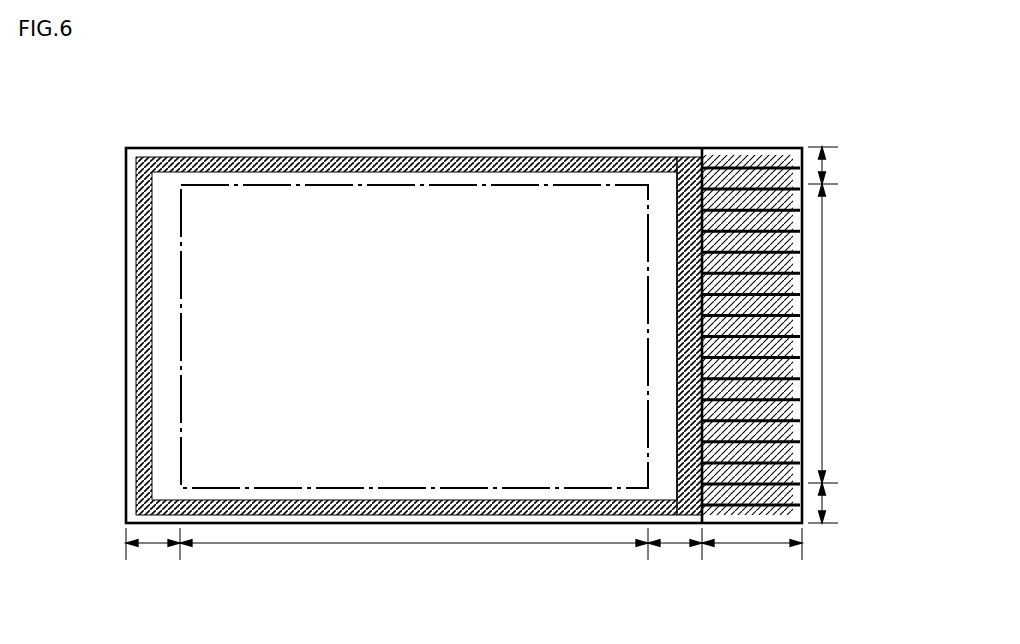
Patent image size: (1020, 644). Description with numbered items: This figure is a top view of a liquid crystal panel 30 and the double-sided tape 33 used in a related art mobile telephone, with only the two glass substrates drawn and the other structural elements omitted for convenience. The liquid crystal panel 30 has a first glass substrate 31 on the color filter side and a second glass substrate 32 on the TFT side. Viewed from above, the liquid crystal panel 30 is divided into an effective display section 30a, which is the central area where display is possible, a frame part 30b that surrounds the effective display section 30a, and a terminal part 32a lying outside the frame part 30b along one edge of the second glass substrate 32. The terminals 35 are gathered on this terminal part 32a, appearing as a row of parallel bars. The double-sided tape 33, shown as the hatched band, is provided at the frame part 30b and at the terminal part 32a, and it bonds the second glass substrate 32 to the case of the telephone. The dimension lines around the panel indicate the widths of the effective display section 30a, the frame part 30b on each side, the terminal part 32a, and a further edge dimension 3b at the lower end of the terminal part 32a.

The liquid crystal panel 30 is at (145, 140).
The effective display section 30a is at (405, 546).
The frame part 30b is at (826, 166).
The first glass substrate 31 is at (708, 148).
The second glass substrate 32 is at (773, 148).
The terminal part 32a is at (758, 548).
The double-sided tape 33 is at (348, 160).
The terminals 35 is at (723, 160).
The edge region 3b is at (826, 503).